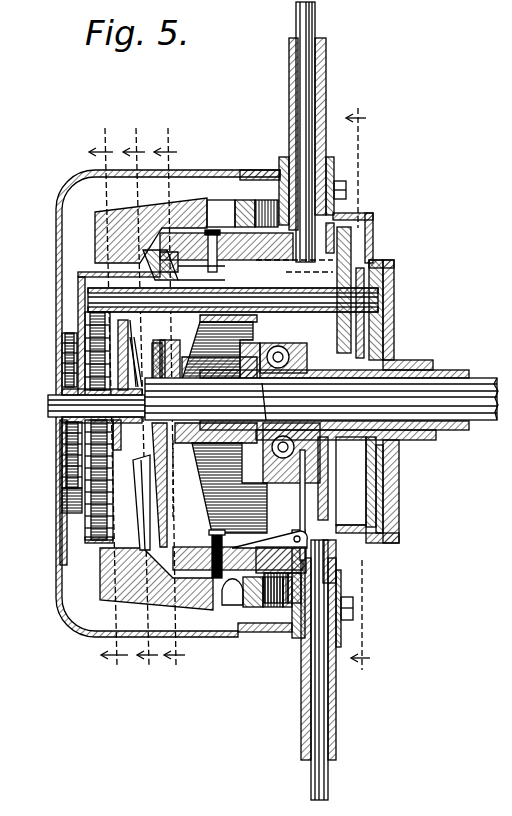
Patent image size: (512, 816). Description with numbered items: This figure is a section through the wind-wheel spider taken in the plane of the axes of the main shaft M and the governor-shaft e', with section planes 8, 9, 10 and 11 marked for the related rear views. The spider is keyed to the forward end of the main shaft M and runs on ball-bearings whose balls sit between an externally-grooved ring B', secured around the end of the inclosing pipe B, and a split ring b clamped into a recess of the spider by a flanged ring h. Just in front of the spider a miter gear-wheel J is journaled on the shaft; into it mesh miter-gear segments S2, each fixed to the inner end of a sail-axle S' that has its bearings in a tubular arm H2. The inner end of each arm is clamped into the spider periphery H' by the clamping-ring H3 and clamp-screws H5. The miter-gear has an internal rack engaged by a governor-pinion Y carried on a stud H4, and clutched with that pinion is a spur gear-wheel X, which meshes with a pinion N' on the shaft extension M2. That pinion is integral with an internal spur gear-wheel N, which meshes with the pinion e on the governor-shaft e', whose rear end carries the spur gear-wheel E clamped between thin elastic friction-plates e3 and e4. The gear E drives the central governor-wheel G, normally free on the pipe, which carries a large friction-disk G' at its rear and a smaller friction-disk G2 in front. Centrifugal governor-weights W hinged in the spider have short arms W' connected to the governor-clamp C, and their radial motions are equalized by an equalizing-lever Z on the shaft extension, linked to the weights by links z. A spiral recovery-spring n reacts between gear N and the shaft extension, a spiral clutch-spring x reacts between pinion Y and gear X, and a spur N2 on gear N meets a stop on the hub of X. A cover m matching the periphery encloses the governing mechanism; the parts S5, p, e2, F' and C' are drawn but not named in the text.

The centrifugal governor-weight W is at (149, 403).
The cover m is at (57, 239).
The section plane 11 11 is at (108, 408).
The section plane 10 10 is at (140, 408).
The section plane 9 9 is at (171, 403).
The section plane 8 8 is at (358, 389).
The sail-axle S' is at (292, 401).
The tubular arm H2 is at (290, 115).
The spider periphery H' is at (272, 403).
The clamping-ring H3 is at (335, 166).
The clamp-screws H5 is at (346, 190).
The miter-gear segment S2 is at (228, 226).
The pinion e is at (200, 292).
The spiral clutch-spring x is at (82, 327).
The recovery-spring n is at (65, 355).
The spur N2 is at (62, 378).
The shaft extension M2 is at (60, 414).
The pinion N' is at (42, 455).
The spur gear-wheel X is at (93, 440).
The internal spur gear-wheel N is at (64, 487).
The equalizing-lever Z is at (127, 392).
The links z is at (143, 487).
The miter gear-wheel J is at (170, 498).
The stud H4 is at (216, 487).
The bolt S5 is at (217, 533).
The pawl p is at (238, 265).
The governor-shaft e' is at (174, 349).
The governor-pinion Y is at (157, 353).
The split ring b is at (285, 470).
The flanged ring h is at (302, 470).
The main shaft M is at (321, 399).
The externally-grooved ring B' is at (261, 401).
The inclosing pipe B is at (334, 395).
The spur gear-wheel E is at (348, 228).
The friction-plate e4 is at (353, 245).
The friction-plate e3 is at (358, 258).
The wall e2 is at (376, 292).
The governor-clamp C is at (393, 401).
The plate F' is at (398, 489).
The friction-disk G' is at (342, 478).
The governor-wheel G is at (351, 481).
The friction-disk G2 is at (357, 482).
The short arms W' is at (285, 557).
The plate C' is at (351, 526).